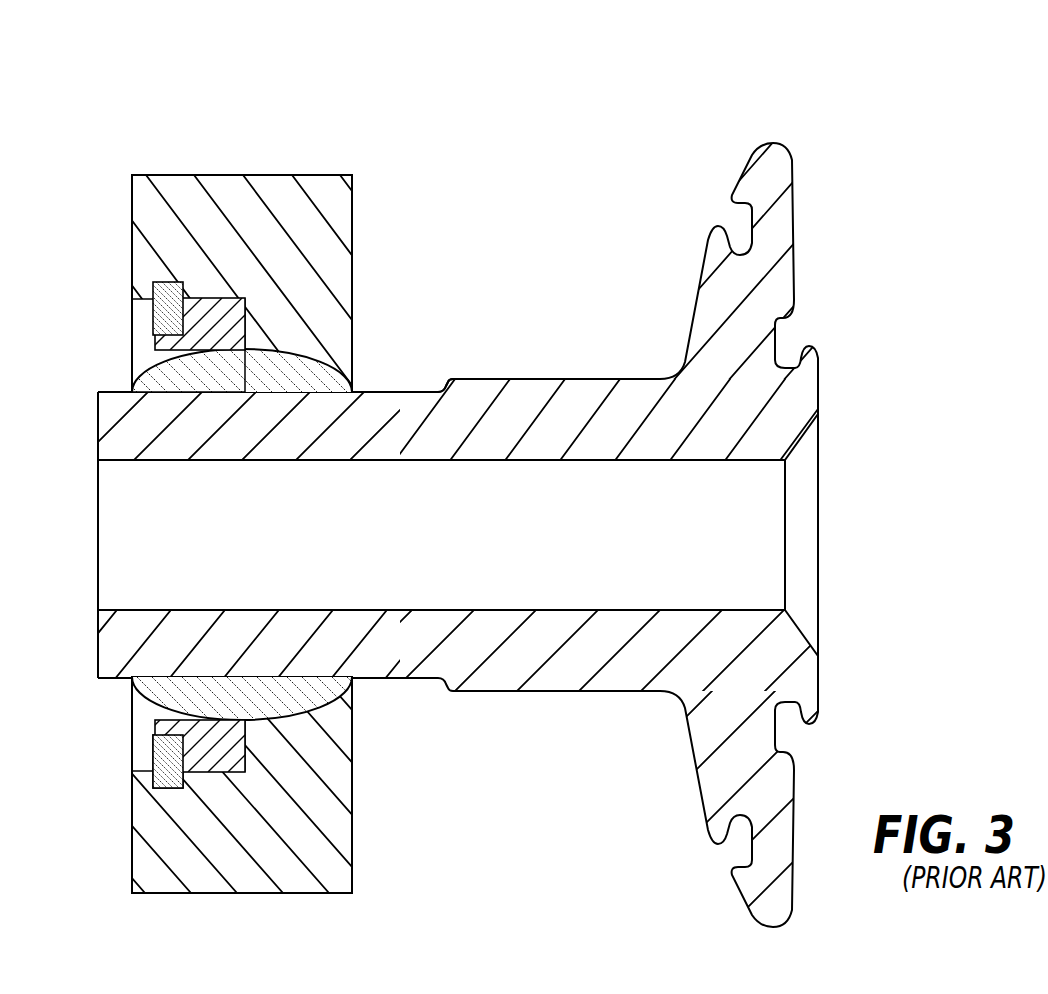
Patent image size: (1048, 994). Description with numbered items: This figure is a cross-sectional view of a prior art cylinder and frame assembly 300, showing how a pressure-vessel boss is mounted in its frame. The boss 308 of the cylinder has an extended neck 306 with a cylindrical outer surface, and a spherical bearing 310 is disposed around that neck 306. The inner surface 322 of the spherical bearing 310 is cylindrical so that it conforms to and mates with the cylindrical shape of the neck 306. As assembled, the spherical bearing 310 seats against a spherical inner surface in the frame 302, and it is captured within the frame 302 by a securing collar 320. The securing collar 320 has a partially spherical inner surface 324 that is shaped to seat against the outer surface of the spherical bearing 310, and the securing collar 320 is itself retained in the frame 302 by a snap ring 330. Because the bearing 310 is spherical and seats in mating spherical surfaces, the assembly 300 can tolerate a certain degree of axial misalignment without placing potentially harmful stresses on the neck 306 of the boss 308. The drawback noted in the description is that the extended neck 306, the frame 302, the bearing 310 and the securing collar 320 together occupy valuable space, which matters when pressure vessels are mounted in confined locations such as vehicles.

The cylinder and frame assembly 300 is at (196, 113).
The frame 302 is at (313, 175).
The neck 306 is at (385, 391).
The boss 308 is at (550, 408).
The spherical bearing 310 is at (313, 368).
The securing collar 320 is at (216, 764).
The inner surface 322 is at (281, 356).
The partially spherical inner surface 324 is at (262, 392).
The snap ring 330 is at (153, 327).